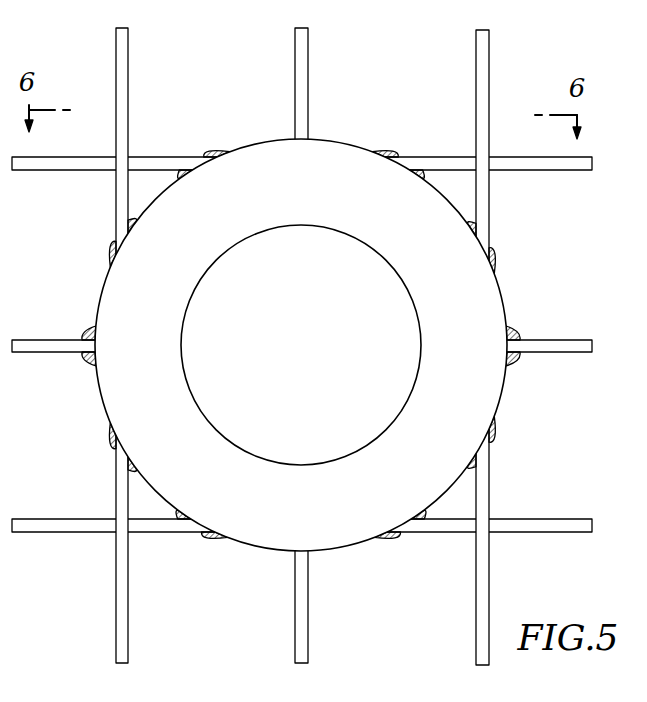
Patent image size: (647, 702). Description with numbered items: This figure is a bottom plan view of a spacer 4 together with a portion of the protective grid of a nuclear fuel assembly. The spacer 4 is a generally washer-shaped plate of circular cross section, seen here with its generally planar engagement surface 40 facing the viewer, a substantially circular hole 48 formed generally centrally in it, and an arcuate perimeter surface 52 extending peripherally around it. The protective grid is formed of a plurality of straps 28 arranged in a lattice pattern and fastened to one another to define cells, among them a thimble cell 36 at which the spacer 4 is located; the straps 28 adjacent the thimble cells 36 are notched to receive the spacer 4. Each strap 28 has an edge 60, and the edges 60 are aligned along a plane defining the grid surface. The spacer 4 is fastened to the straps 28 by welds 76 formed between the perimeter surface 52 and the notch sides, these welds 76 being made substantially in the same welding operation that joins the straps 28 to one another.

The spacer 4 is at (326, 339).
The straps 28 is at (326, 339).
The thimble cells 36 is at (140, 518).
The engagement surface 40 is at (301, 320).
The circular hole 48 is at (386, 261).
The perimeter surface 52 is at (331, 140).
The edge 60 is at (326, 346).
The weld 76 is at (497, 243).